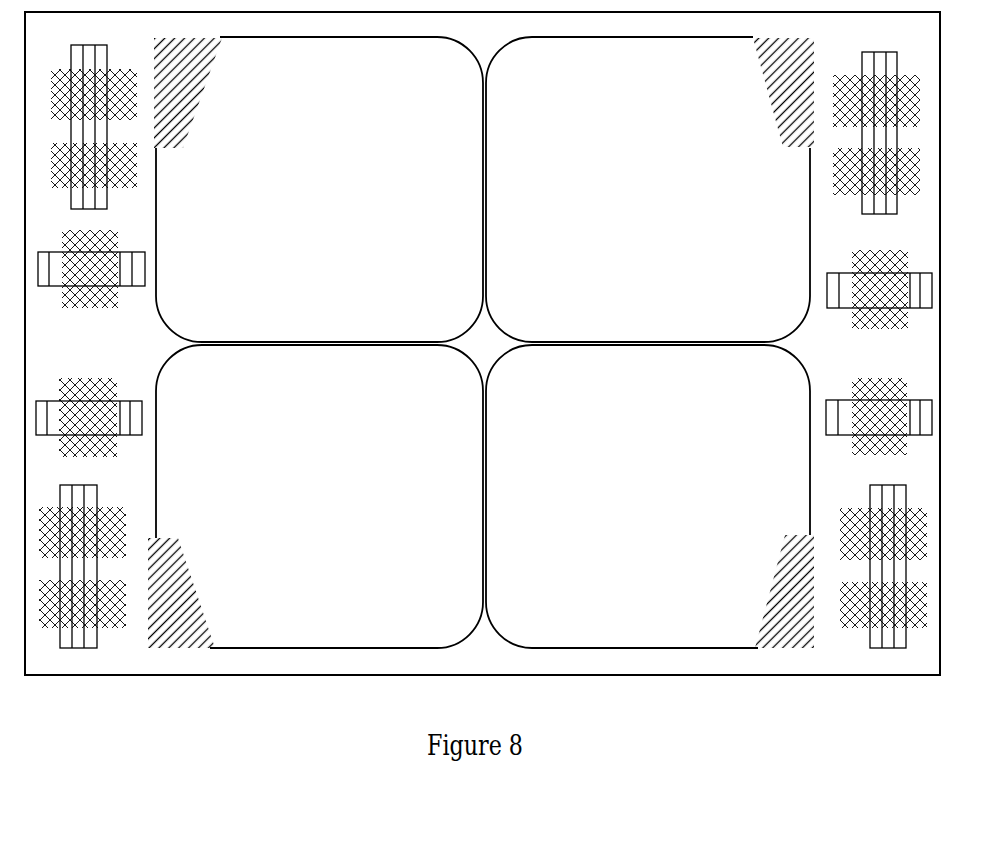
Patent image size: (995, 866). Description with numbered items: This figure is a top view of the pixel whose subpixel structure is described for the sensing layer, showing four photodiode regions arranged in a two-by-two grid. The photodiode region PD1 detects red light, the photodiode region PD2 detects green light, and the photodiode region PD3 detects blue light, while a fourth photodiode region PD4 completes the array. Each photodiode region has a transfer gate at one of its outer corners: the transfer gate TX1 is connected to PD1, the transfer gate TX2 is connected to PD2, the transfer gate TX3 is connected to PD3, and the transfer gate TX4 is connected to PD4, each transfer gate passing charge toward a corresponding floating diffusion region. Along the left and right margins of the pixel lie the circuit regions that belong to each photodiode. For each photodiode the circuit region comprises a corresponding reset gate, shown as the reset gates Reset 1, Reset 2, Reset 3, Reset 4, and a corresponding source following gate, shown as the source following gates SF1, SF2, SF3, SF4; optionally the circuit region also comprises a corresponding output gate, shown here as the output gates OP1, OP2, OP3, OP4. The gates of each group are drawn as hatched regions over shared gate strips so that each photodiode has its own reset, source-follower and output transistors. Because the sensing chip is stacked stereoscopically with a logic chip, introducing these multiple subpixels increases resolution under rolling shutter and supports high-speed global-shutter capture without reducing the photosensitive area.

The photodiode region PD1 is at (319, 189).
The photodiode region PD2 is at (648, 189).
The photodiode region PD3 is at (319, 496).
The photodiode 4 PD4 is at (648, 496).
The transfer gate TX1 is at (188, 93).
The transfer gate TX2 is at (784, 92).
The transfer gate TX3 is at (181, 593).
The transfer gate 4 TX4 is at (785, 591).
The output transistor 1 OP1 is at (94, 127).
The output transistor 2 OP2 is at (876, 133).
The output transistor 3 OP3 is at (82, 566).
The output transistor 4 OP4 is at (883, 566).
The source follower 1 SF1 is at (94, 165).
The source follower 2 SF2 is at (876, 171).
The source follower 3 SF3 is at (82, 532).
The source follower 4 SF4 is at (883, 534).
The reset transistor 1 Reset 1 is at (91, 269).
The reset transistor 2 Reset 2 is at (879, 289).
The reset transistor 3 Reset 3 is at (89, 417).
The reset transistor 4 Reset 4 is at (879, 416).